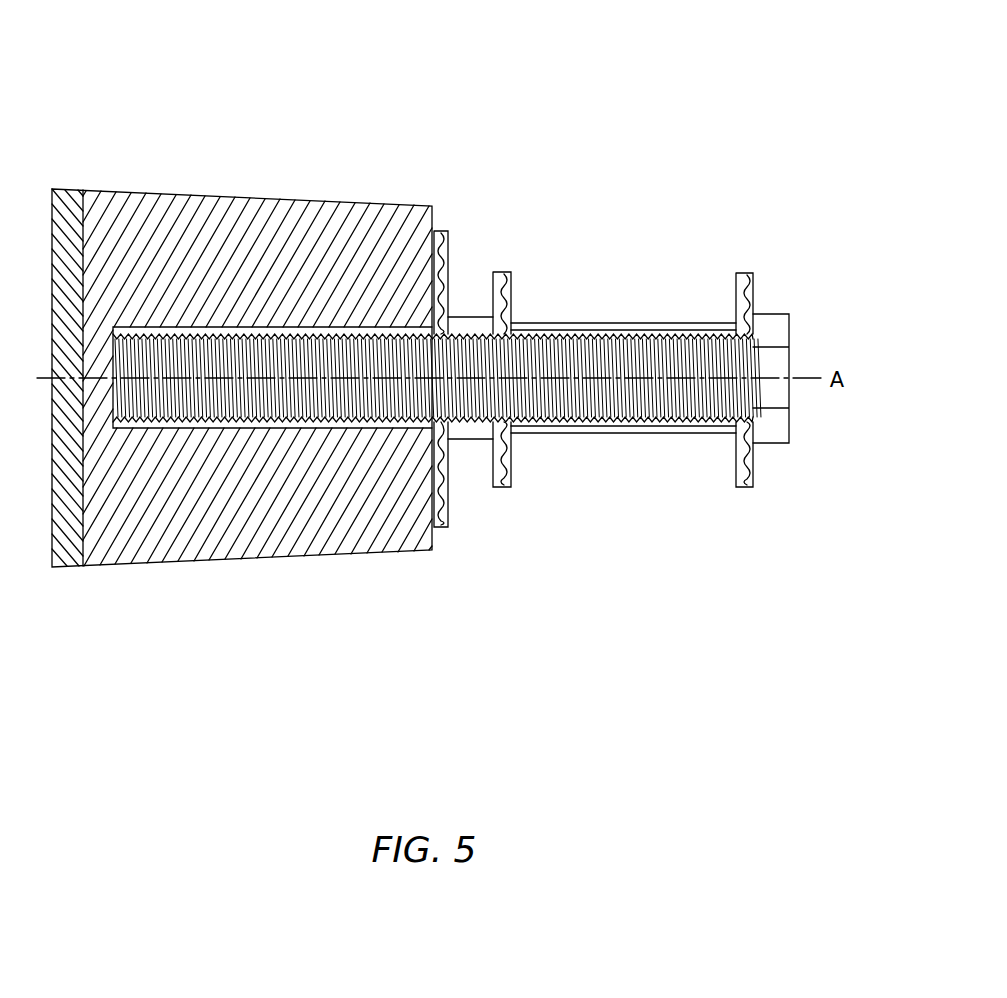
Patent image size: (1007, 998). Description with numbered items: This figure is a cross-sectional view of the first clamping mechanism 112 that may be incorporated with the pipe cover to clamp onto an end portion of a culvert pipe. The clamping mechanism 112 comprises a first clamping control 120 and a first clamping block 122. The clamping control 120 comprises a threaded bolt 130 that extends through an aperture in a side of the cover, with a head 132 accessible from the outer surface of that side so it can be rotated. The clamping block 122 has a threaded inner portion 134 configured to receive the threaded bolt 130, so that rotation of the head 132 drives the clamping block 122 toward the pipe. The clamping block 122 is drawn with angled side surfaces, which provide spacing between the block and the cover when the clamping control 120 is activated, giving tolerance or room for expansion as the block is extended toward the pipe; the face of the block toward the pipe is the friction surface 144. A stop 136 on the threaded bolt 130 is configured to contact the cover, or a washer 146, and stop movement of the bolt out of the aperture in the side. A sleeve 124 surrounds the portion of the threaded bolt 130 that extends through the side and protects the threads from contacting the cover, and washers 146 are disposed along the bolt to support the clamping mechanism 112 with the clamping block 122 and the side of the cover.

The first clamping mechanism 112 is at (427, 204).
The first clamping control 120 is at (592, 331).
The first clamping block 122 is at (350, 203).
The sleeve 124 is at (615, 326).
The threaded bolt 130 is at (577, 410).
The head 132 is at (777, 325).
The threaded inner portion 134 is at (351, 426).
The stop 136 is at (459, 436).
The friction surface 144 is at (65, 565).
The washer 146 is at (506, 272).